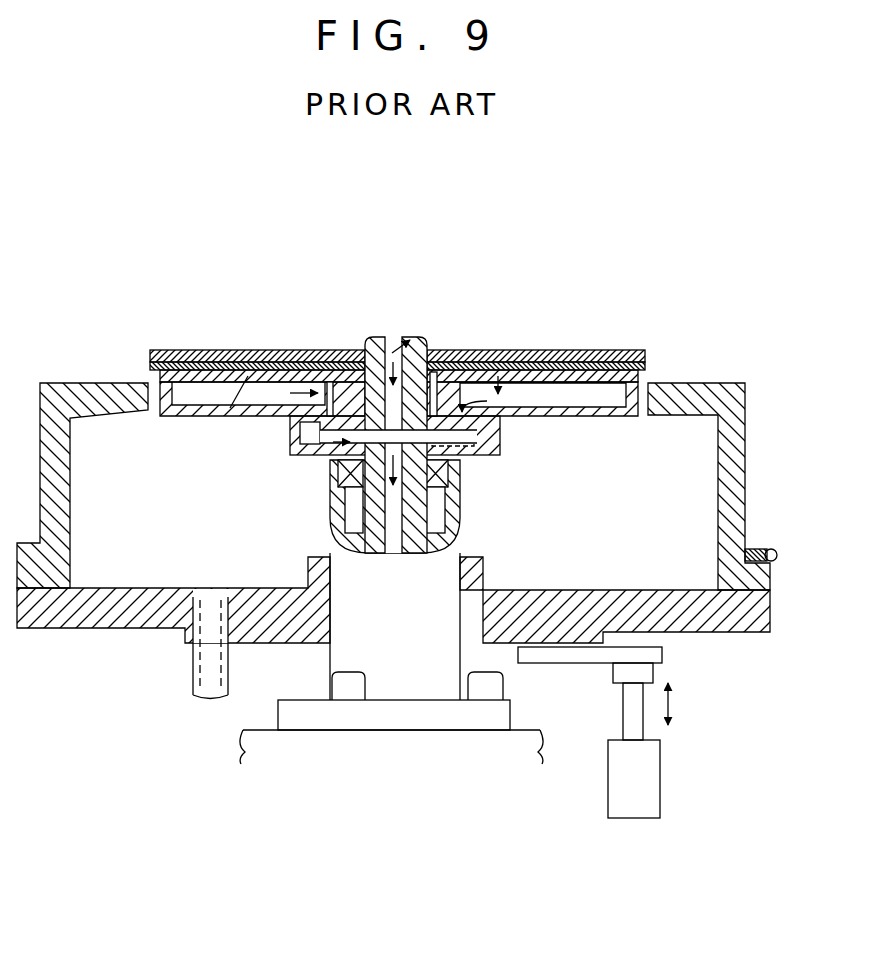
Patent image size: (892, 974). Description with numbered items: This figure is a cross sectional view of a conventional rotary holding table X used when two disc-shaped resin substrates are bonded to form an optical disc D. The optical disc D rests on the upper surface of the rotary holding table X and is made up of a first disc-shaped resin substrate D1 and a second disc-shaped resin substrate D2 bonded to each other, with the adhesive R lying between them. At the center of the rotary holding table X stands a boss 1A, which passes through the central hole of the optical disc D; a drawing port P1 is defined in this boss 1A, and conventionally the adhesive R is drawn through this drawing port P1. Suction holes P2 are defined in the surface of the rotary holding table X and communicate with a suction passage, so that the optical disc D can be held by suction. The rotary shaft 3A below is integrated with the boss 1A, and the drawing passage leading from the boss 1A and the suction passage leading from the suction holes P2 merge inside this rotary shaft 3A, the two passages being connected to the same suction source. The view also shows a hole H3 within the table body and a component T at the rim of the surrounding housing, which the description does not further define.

The optical disc D is at (341, 316).
The first disc-shaped resin substrate D1 is at (361, 350).
The second disc-shaped resin substrate D2 is at (157, 353).
The adhesive R is at (182, 370).
The drawing port P1 is at (423, 325).
The suction holes P2 is at (217, 370).
The boss 1A is at (387, 338).
The rotary shaft 3A is at (292, 446).
The hole H3 is at (437, 400).
The rotary holding table X is at (397, 521).
The tray T is at (680, 418).